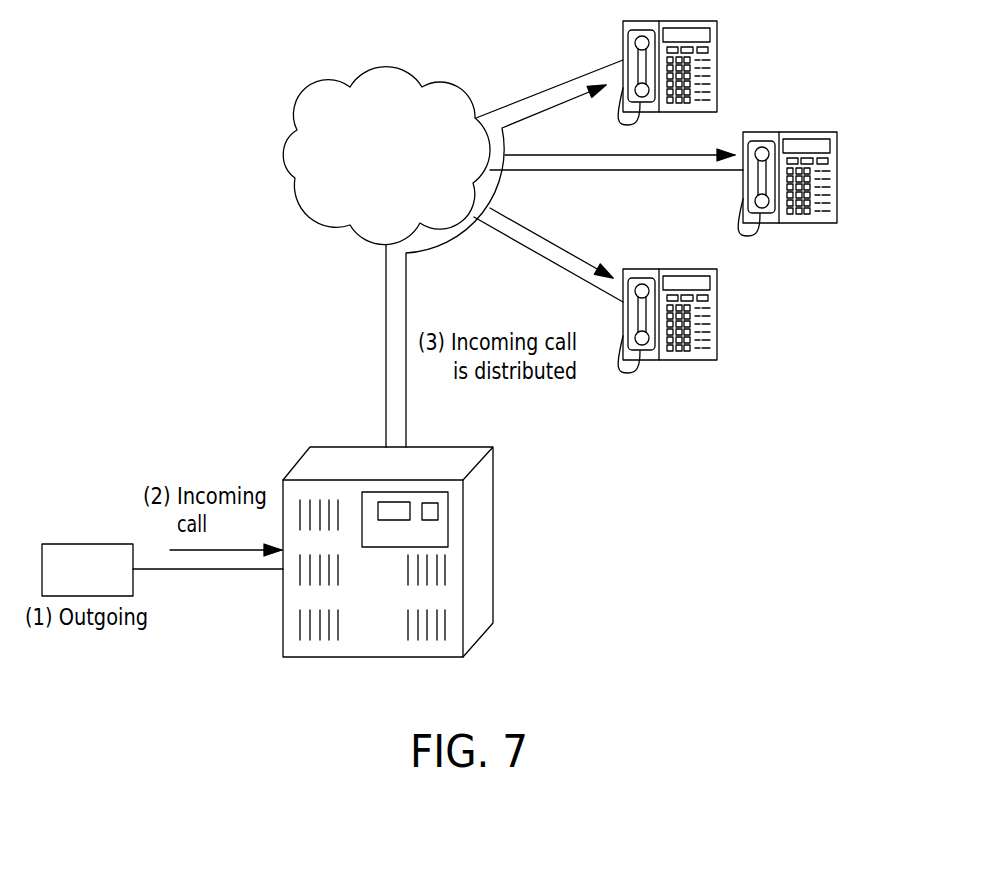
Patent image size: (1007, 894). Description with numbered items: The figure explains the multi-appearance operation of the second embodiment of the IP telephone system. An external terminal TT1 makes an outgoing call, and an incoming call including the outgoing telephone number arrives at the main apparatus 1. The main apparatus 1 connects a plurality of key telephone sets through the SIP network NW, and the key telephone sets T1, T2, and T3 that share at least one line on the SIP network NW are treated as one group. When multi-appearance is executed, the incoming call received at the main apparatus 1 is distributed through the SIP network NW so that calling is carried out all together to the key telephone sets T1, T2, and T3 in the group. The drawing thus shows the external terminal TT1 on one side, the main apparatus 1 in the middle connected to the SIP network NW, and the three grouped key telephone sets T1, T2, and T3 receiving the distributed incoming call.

The SIP network NW is at (378, 67).
The main apparatus 1 is at (493, 497).
The key telephone set T1 is at (717, 52).
The key telephone set T2 is at (837, 167).
The key telephone set T3 is at (715, 303).
The external terminal TT1 is at (99, 544).